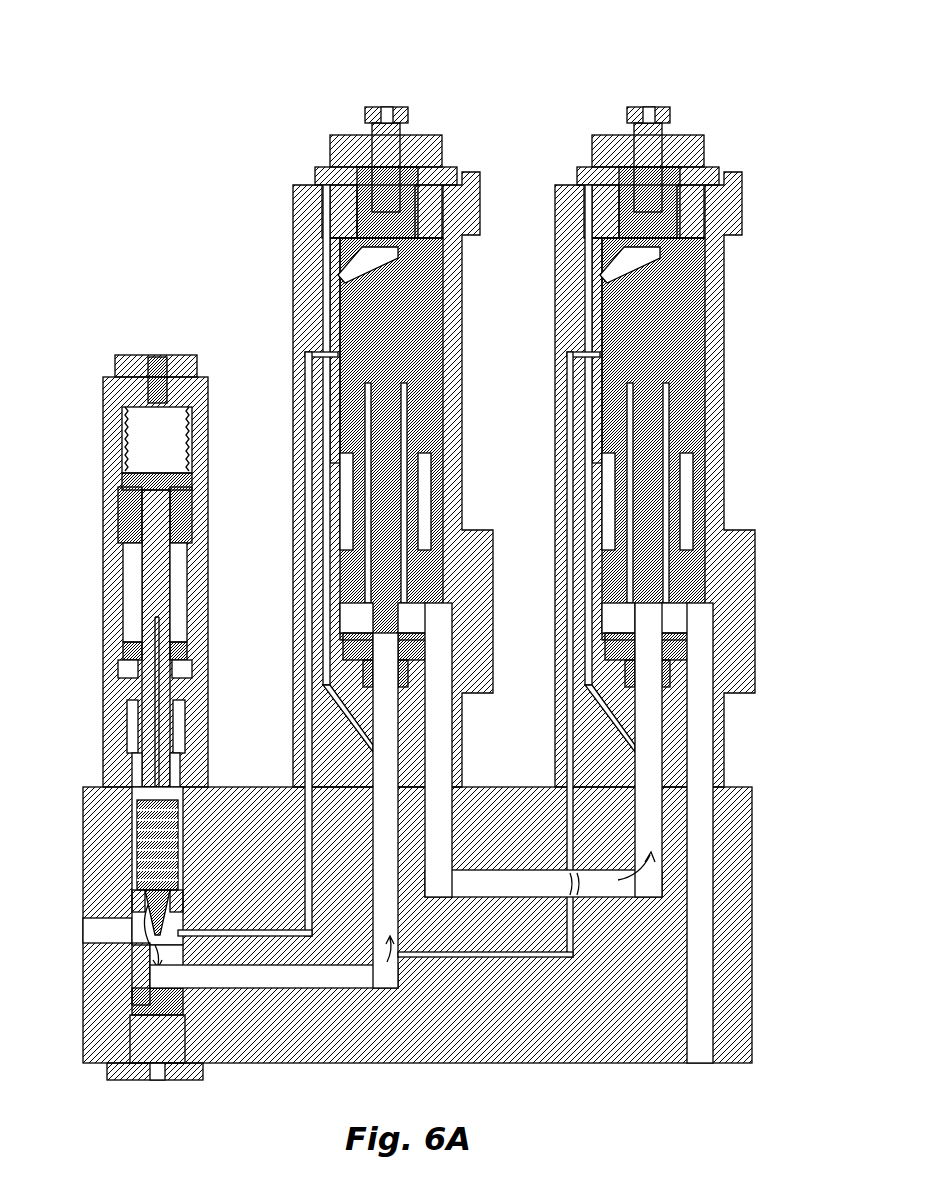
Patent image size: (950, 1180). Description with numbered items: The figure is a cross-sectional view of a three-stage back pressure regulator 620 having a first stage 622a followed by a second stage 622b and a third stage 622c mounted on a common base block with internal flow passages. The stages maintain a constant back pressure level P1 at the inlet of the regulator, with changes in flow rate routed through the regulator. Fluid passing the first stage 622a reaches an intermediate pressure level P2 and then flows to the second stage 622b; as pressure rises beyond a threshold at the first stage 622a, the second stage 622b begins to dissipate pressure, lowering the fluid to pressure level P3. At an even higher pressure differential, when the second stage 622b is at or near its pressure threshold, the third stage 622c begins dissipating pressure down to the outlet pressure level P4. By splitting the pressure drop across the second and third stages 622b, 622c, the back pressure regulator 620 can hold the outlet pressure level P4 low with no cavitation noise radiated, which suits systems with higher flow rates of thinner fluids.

The back pressure regulator 620 is at (200, 82).
The first stage 622a is at (258, 297).
The second stage 622b is at (487, 85).
The third stage 622c is at (745, 85).
The back pressure level P1 is at (116, 925).
The pressure level P2 is at (274, 811).
The pressure level P3 is at (543, 750).
The outlet pressure level P4 is at (698, 833).